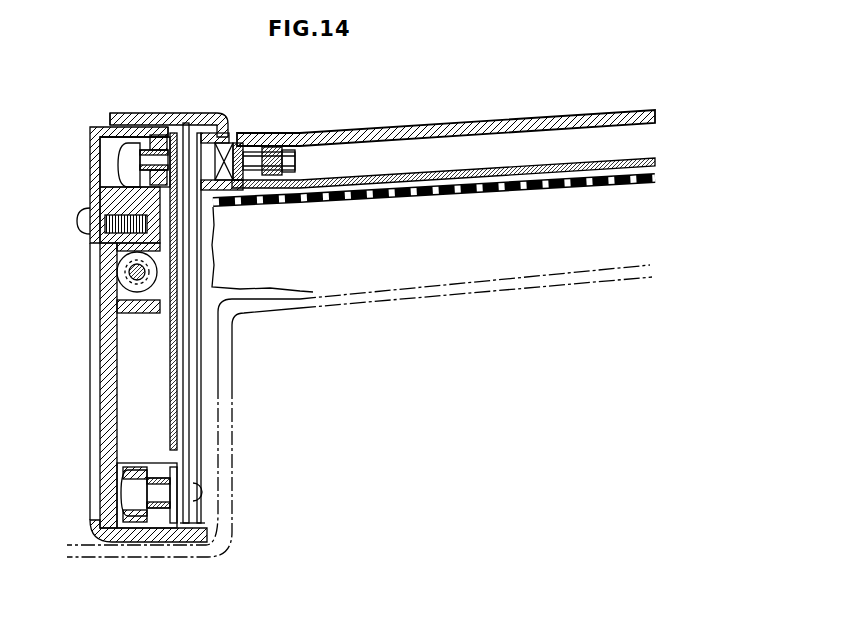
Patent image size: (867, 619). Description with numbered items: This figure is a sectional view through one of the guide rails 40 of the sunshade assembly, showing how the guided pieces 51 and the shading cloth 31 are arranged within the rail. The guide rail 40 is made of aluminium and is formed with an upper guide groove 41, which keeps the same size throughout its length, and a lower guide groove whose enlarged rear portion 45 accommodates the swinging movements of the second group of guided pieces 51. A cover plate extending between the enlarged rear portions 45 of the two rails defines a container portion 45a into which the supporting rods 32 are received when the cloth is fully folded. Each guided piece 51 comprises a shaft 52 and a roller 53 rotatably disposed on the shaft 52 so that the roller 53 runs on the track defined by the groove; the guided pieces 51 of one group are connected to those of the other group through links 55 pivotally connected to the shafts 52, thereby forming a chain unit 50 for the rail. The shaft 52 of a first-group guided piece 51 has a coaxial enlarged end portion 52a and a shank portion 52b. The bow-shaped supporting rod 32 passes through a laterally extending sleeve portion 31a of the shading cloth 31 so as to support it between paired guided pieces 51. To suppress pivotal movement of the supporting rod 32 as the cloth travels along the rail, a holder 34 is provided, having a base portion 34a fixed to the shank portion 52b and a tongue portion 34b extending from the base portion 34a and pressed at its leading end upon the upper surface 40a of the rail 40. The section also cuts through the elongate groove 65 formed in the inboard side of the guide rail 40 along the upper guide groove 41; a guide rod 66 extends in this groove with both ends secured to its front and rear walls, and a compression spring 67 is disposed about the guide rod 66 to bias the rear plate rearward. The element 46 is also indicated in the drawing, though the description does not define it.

The shading cloth 31 is at (402, 263).
The sleeve portion 31a is at (527, 123).
The supporting rod 32 is at (494, 175).
The holder 34 is at (186, 111).
The base portion 34a is at (222, 140).
The tongue portion 34b is at (125, 112).
The guide rail 40 is at (83, 128).
The upper surface 40a is at (107, 126).
The upper guide groove 41 is at (100, 183).
The enlarged rear portion 45 is at (160, 400).
The container portion 45a is at (497, 262).
The projection 46 is at (103, 260).
The chain unit 50 is at (207, 367).
The guided piece 51 is at (112, 170).
The shaft 52 is at (138, 163).
The enlarged end portion 52a is at (283, 168).
The shank portion 52b is at (234, 145).
The roller 53 is at (150, 138).
The link 55 is at (190, 410).
The elongate groove 65 is at (113, 297).
The guide rod 66 is at (135, 272).
The compression spring 67 is at (127, 280).